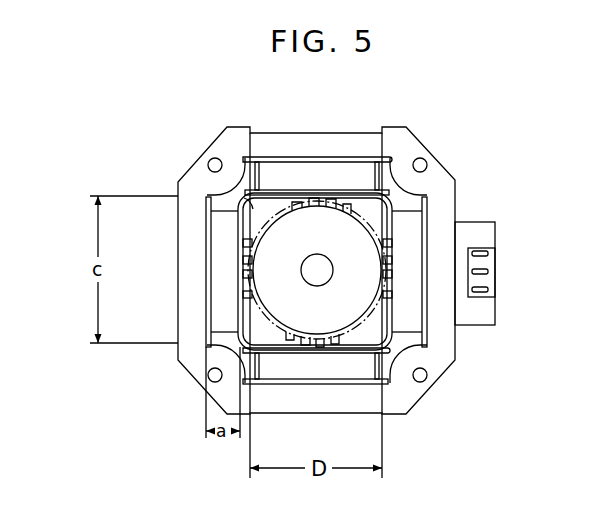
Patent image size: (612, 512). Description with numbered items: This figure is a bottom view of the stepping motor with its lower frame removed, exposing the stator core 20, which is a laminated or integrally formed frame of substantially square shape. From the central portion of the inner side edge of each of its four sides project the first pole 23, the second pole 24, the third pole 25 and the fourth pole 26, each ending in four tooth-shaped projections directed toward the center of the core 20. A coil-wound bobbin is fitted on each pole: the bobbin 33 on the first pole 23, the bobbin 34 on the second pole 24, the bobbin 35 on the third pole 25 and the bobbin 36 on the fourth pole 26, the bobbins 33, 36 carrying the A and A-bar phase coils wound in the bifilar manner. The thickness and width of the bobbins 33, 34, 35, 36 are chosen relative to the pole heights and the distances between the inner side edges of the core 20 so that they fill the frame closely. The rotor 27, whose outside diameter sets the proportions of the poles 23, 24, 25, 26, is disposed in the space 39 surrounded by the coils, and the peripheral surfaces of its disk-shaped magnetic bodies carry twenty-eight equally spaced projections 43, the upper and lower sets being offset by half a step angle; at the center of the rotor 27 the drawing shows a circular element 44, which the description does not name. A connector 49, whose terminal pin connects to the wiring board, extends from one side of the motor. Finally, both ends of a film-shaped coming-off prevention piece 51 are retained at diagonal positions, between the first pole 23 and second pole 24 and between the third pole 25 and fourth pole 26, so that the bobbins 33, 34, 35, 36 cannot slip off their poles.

The stator core 20 is at (436, 165).
The first pole 23 is at (293, 190).
The second pole 24 is at (392, 257).
The third pole 25 is at (243, 296).
The fourth pole 26 is at (304, 337).
The rotor 27 is at (266, 228).
The bobbin 33 is at (354, 157).
The bobbin 34 is at (429, 214).
The bobbin 35 is at (206, 262).
The bobbin 36 is at (336, 385).
The space 39 is at (247, 195).
The projections 43 is at (299, 209).
The rotor shaft 44 is at (328, 266).
The connector 49 is at (494, 230).
The coming-off prevention piece 51 is at (412, 137).